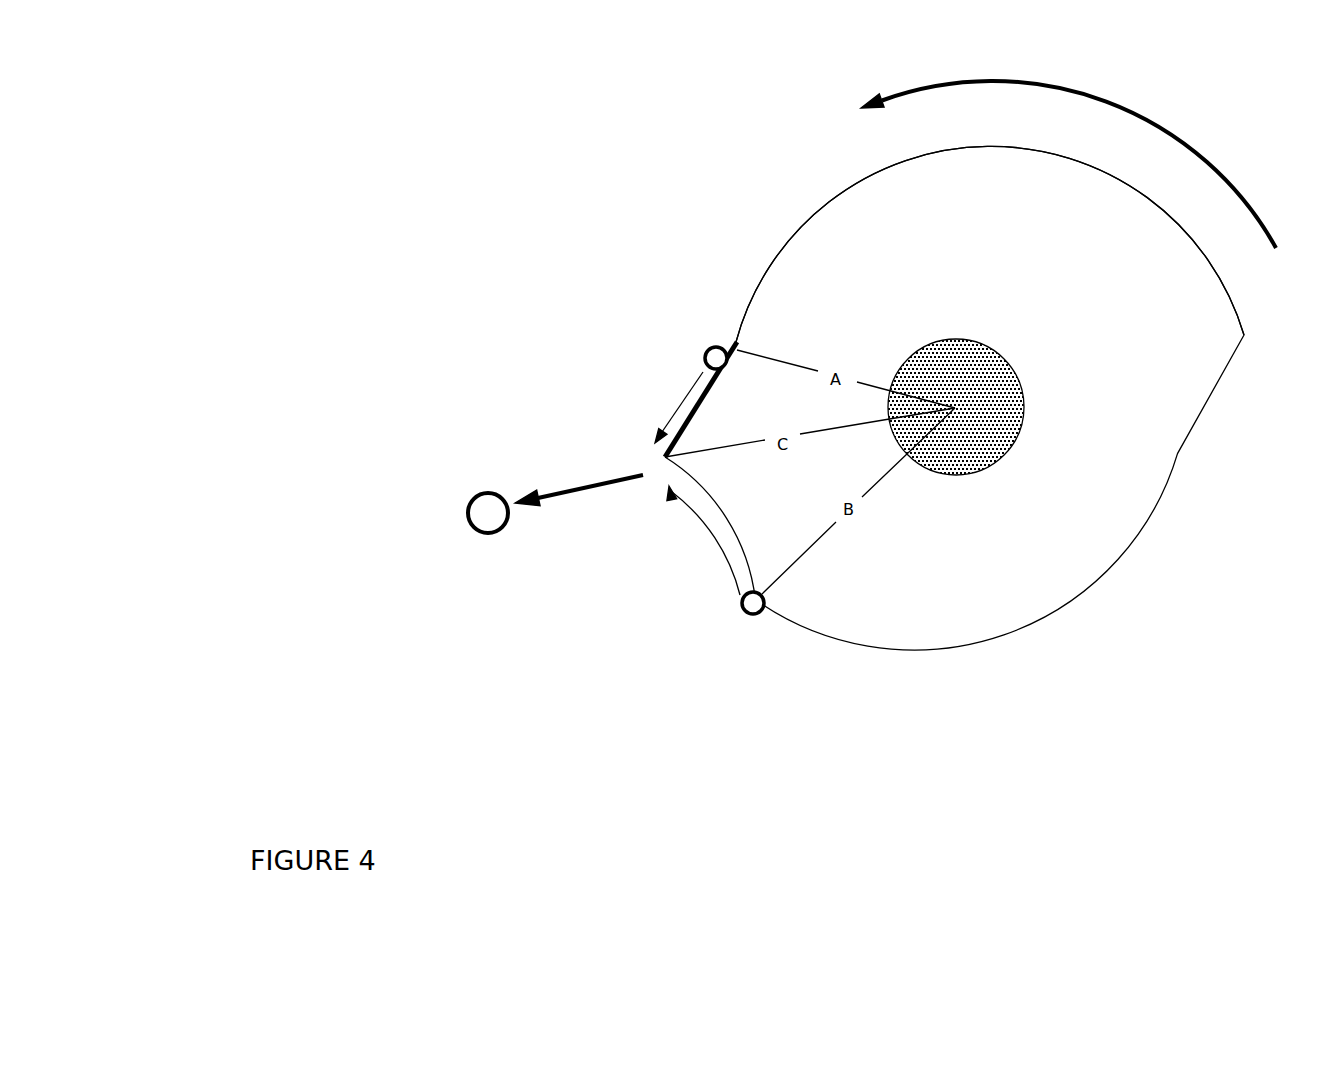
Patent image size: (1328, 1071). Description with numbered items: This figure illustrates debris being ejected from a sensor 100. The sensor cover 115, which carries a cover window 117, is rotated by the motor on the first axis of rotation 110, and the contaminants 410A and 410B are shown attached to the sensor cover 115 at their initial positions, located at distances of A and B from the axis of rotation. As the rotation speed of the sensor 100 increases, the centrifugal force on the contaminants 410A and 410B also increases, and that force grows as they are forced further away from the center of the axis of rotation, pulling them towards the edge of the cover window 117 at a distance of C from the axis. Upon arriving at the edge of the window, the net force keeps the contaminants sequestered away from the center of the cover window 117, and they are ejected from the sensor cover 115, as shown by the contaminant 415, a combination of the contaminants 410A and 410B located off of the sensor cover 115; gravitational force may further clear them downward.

The rotating body 100 is at (947, 681).
The first axis of rotation 110 is at (910, 93).
The sensor cover 115 is at (800, 227).
The cover window 117 is at (673, 417).
The contaminant 410A is at (703, 358).
The contaminant 410B is at (740, 607).
The contaminant 415 is at (466, 517).